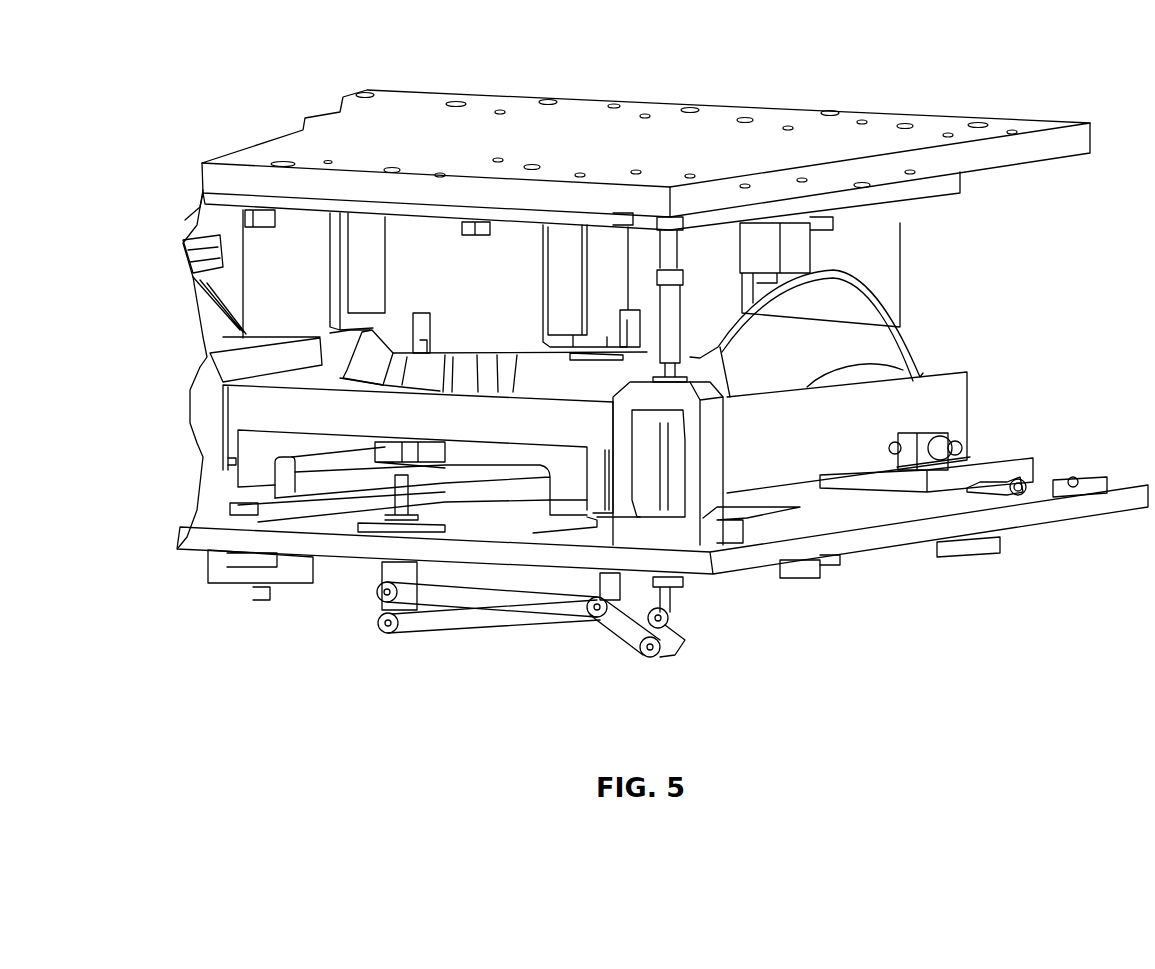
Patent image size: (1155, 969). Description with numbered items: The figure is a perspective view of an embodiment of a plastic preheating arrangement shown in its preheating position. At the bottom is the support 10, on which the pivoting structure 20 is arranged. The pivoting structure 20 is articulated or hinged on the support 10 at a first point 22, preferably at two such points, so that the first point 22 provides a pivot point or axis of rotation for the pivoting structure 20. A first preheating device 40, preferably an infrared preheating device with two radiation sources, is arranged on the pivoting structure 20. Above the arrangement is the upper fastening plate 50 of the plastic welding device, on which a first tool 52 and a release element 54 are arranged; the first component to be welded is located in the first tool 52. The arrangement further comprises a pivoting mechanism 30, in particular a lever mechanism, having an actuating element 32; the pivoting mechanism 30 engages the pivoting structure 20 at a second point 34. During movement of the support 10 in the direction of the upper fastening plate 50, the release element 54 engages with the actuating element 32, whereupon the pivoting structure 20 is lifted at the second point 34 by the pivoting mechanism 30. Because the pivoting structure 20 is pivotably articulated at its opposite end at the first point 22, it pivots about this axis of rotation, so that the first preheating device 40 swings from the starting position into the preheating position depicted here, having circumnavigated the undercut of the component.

The support 10 is at (1125, 485).
The pivoting structure 20 is at (252, 445).
The first point 22 is at (997, 483).
The pivoting mechanism 30 is at (463, 618).
The actuating element 32 is at (677, 456).
The second point 34 is at (483, 489).
The first preheating device 40 is at (850, 330).
The upper fastening plate 50 is at (804, 120).
The first tool 52 is at (410, 264).
The release element 54 is at (672, 253).